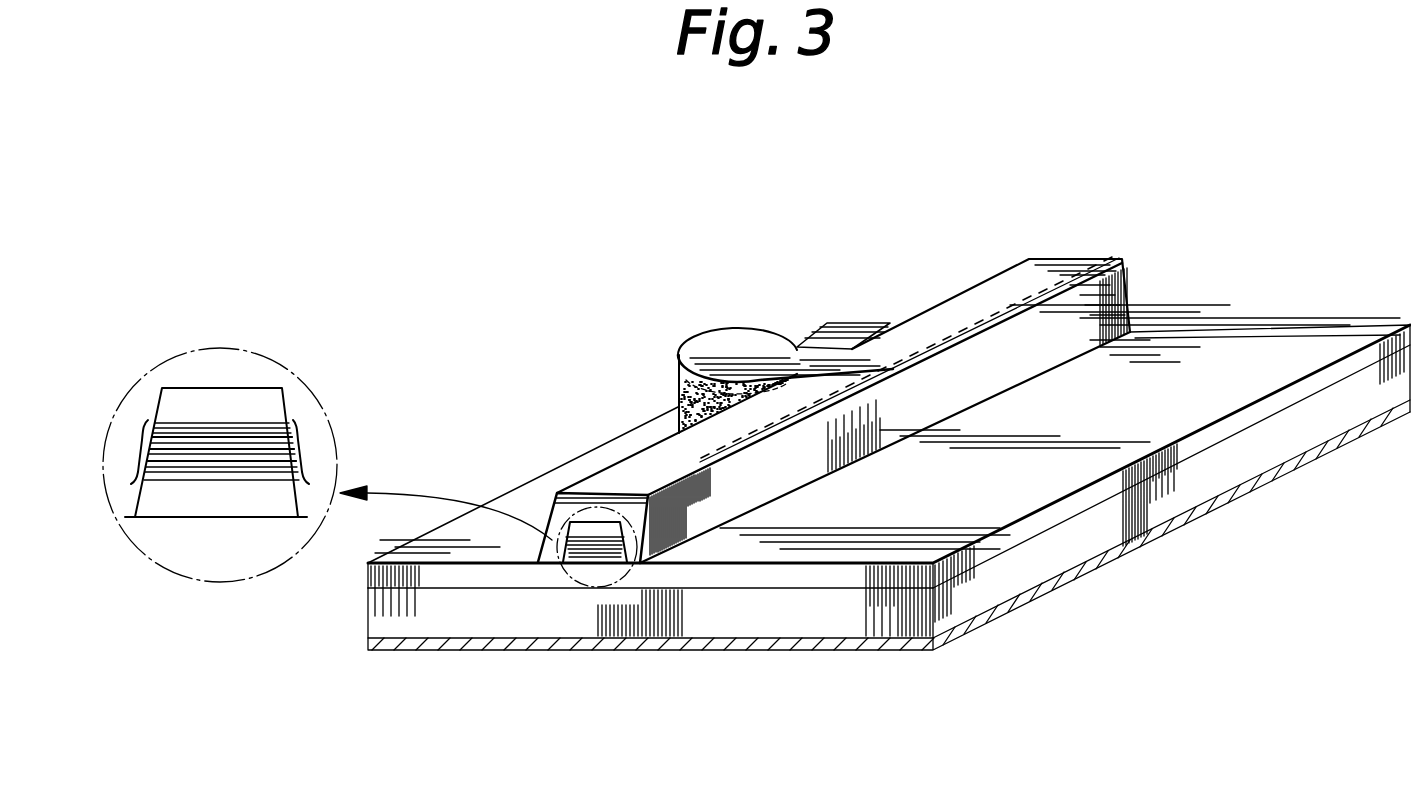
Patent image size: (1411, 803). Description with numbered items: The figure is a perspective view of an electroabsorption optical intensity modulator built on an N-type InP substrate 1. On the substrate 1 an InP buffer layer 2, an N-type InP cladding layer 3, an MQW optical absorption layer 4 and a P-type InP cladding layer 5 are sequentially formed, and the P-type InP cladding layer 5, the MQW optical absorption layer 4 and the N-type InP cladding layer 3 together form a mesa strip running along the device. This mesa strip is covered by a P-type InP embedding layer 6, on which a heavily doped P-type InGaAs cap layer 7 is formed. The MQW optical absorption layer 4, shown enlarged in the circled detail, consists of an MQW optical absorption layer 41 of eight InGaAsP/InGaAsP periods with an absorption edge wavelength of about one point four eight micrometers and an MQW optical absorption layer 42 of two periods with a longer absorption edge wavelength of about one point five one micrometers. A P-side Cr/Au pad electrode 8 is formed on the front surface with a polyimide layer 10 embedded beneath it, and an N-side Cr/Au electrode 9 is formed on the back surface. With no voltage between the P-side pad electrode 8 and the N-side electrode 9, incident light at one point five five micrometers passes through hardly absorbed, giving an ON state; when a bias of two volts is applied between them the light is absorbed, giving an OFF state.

The N-type InP substrate 1 is at (441, 620).
The InP buffer layer 2 is at (838, 575).
The N-type InP cladding layer 3 is at (600, 563).
The MQW optical absorption layer 4 is at (557, 528).
The P-type InP cladding layer 5 is at (568, 522).
The P-type InP embedding layer 6 is at (650, 555).
The P-type InGaAs cap layer 7 is at (583, 523).
The P-side Cr/Au pad electrode 8 is at (742, 352).
The N-side Cr/Au electrode 9 is at (1008, 612).
The polyimide layer 10 is at (678, 392).
The MQW optical absorption layer 41 is at (300, 432).
The MQW optical absorption layer 42 is at (305, 468).